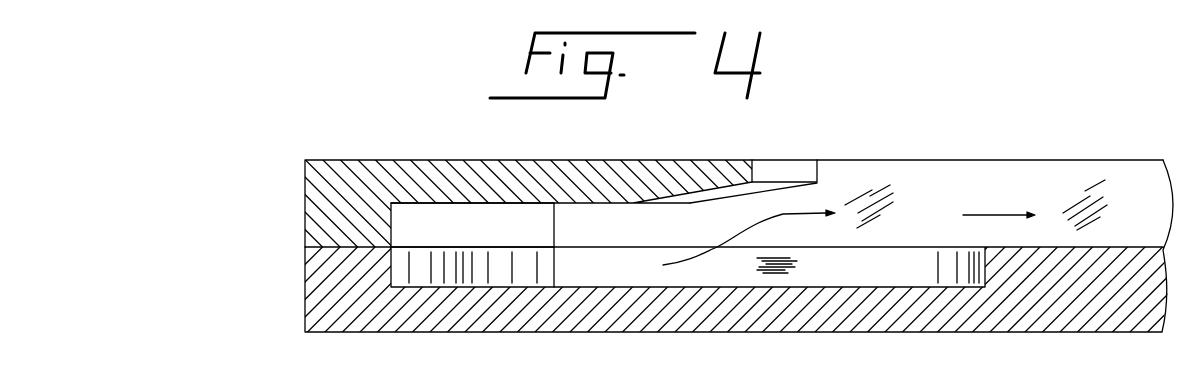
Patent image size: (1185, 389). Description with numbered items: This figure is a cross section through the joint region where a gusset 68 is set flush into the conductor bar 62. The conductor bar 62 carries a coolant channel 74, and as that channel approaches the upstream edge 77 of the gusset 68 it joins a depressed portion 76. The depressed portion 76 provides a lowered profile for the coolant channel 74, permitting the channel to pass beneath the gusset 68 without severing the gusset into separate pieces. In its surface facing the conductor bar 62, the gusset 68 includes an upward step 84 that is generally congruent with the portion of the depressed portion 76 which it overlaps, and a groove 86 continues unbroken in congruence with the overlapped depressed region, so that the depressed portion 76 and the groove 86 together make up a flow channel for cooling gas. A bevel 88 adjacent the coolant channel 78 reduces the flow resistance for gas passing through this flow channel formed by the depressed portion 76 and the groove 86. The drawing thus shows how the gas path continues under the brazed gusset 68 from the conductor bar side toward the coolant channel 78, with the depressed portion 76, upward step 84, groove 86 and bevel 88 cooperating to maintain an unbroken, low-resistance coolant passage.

The conductor bar 62 is at (330, 320).
The gusset 68 is at (667, 158).
The coolant channel 74 is at (1043, 180).
The depressed portion 76 is at (890, 262).
The upstream edge 77 is at (787, 168).
The coolant channel 78 is at (457, 220).
The upward step 84 is at (410, 263).
The groove 86 is at (592, 233).
The bevel 88 is at (720, 193).